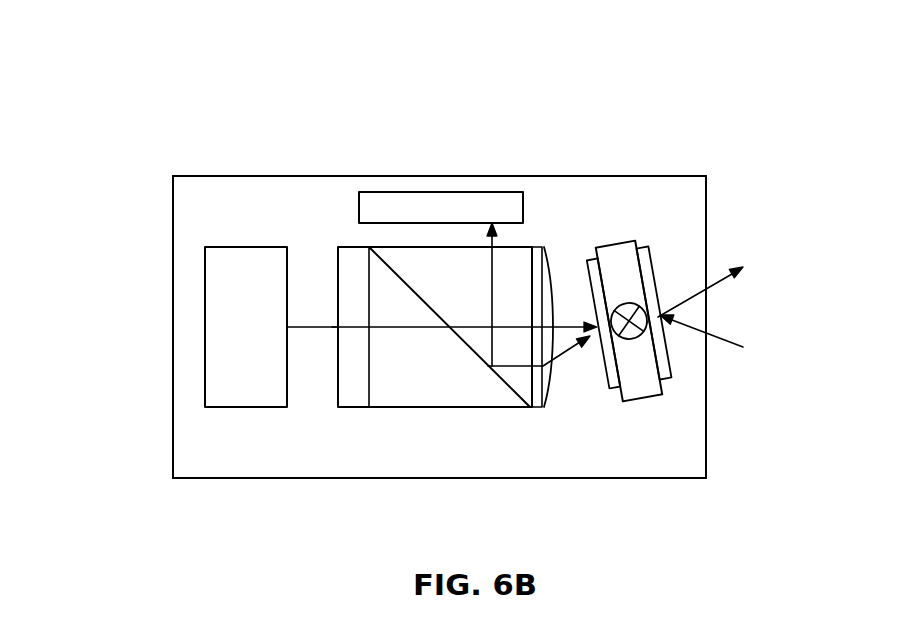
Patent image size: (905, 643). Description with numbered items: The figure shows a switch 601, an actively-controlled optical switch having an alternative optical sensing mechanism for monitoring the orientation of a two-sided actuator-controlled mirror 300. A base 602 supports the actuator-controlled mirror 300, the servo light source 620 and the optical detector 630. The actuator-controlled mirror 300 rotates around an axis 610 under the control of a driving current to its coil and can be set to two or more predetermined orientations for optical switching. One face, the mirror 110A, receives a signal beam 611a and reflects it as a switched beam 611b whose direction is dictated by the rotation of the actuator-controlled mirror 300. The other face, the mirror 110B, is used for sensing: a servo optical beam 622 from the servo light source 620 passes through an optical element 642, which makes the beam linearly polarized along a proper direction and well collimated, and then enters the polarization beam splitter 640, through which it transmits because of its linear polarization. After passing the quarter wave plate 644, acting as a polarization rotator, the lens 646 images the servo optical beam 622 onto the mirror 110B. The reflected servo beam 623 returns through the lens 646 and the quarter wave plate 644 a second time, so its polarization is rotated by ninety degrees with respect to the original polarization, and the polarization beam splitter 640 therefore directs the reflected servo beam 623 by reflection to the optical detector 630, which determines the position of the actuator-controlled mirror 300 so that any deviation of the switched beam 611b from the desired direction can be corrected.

The switch 601 is at (146, 82).
The base 602 is at (692, 215).
The servo light source 620 is at (218, 395).
The servo optical beam 622 is at (327, 322).
The polarization beam splitter 640 is at (436, 397).
The optical element 642 is at (348, 253).
The quarter wave plate 644 is at (533, 410).
The optical detector 630 is at (425, 190).
The lens 646 is at (548, 247).
The reflected servo beam 623 is at (592, 352).
The actuator-controlled mirror 300 is at (656, 417).
The mirror 110A is at (653, 253).
The mirror 110B is at (613, 397).
The axis 610 is at (650, 333).
The signal beam 611a is at (718, 340).
The switched beam 611b is at (716, 277).